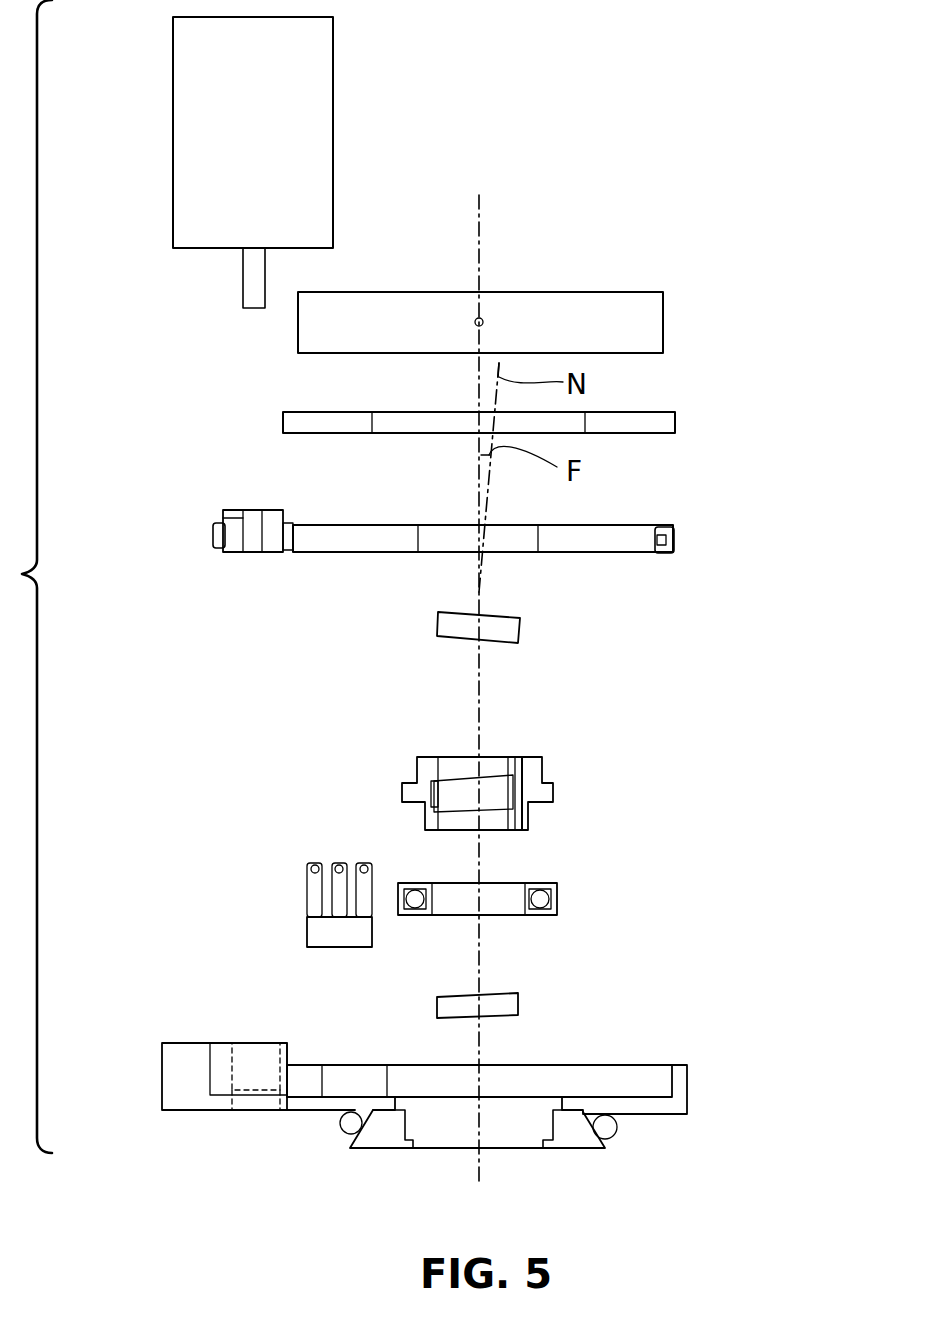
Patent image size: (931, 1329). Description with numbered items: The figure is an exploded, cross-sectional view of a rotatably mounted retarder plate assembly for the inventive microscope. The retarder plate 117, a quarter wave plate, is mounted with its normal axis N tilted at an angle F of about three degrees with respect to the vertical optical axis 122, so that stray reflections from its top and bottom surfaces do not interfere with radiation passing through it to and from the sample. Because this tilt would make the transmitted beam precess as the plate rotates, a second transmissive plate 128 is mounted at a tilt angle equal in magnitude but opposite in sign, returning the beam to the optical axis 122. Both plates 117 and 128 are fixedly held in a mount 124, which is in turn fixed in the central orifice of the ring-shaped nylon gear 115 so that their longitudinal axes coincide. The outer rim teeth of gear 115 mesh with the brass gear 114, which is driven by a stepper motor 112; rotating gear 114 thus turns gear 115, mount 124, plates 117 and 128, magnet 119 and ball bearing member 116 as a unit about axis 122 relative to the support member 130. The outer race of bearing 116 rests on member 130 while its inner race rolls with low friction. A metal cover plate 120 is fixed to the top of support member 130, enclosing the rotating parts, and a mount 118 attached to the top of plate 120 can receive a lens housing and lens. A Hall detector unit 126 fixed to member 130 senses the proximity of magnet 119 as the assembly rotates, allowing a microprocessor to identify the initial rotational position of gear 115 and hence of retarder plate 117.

The stepper motor 112 is at (207, 248).
The gear 114 is at (214, 535).
The gear 115 is at (615, 554).
The ball bearing member 116 is at (557, 899).
The retarder plate 117 is at (437, 625).
The mount 118 is at (638, 292).
The magnet 119 is at (657, 527).
The metal cover plate 120 is at (663, 412).
The axis 122 is at (479, 221).
The mount 124 is at (402, 789).
The Hall detector unit 126 is at (307, 932).
The transmissive plate 128 is at (437, 1005).
The support member 130 is at (640, 1065).